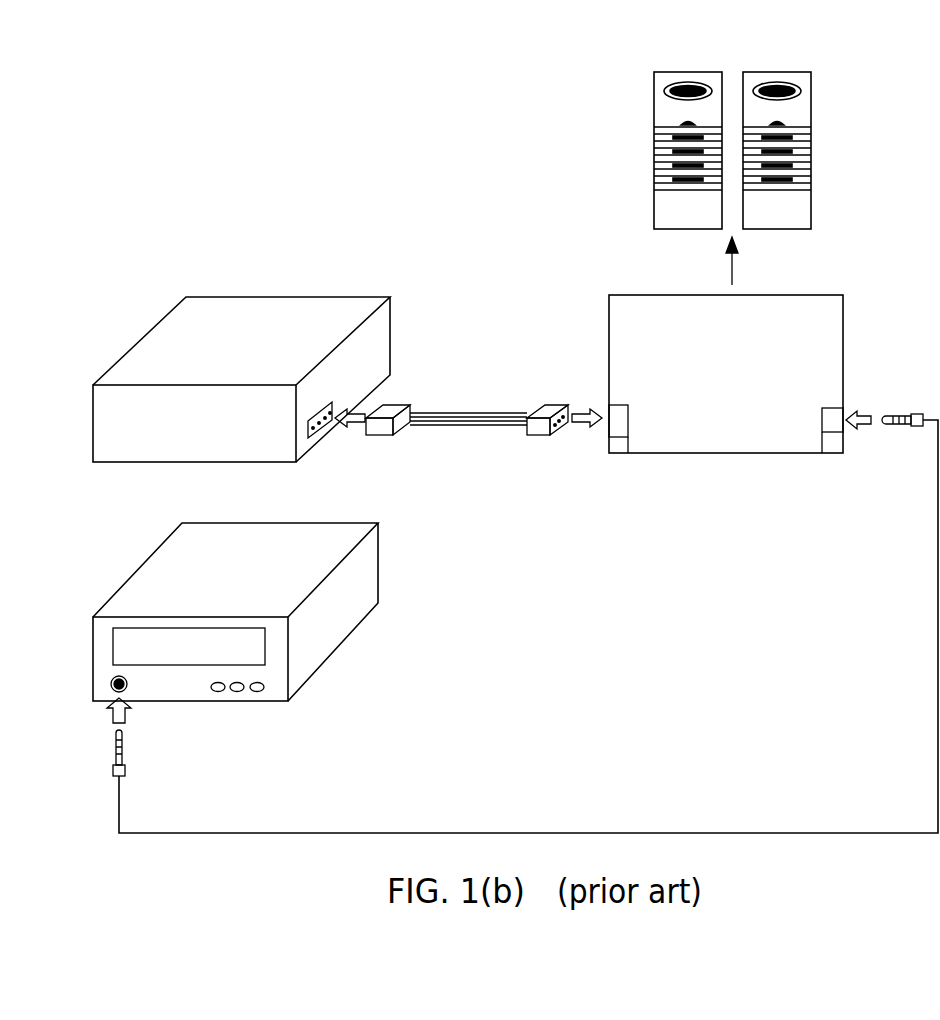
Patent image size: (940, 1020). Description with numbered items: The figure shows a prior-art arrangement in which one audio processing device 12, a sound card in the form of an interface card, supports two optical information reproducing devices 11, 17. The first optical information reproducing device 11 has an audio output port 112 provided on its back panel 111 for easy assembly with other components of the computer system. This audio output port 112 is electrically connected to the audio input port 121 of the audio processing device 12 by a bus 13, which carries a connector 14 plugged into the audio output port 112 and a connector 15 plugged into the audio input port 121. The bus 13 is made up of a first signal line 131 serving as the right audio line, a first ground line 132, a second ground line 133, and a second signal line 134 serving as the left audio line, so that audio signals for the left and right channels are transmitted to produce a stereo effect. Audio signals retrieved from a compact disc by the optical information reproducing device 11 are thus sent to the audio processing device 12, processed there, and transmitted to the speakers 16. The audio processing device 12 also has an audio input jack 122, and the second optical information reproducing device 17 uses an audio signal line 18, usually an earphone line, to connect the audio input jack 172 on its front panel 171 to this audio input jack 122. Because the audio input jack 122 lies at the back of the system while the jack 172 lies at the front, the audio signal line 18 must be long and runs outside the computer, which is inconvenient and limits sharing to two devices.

The optical information reproducing device 11 is at (250, 357).
The back panel 111 is at (378, 357).
The audio output port 112 is at (310, 437).
The audio processing device 12 is at (734, 370).
The audio input port 121 is at (623, 427).
The audio input jack 122 is at (832, 420).
The bus 13 is at (474, 480).
The first signal line 131 is at (458, 413).
The first ground line 132 is at (450, 417).
The second ground line 133 is at (441, 421).
The second signal line 134 is at (430, 425).
The connector 14 is at (393, 410).
The connector 15 is at (546, 408).
The speakers 16 is at (757, 75).
The optical information reproducing device 17 is at (250, 585).
The front panel 171 is at (278, 692).
The audio input jack 172 is at (128, 684).
The audio signal line 18 is at (277, 835).